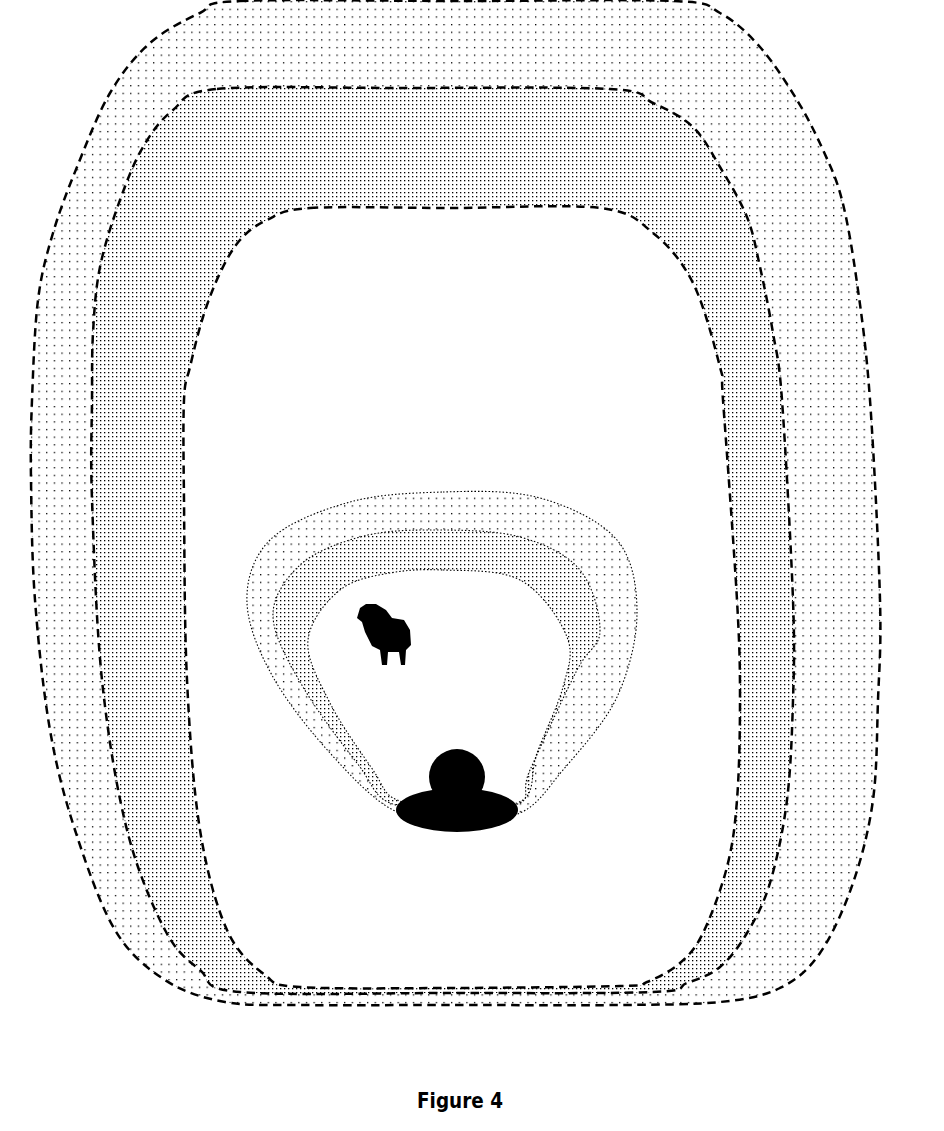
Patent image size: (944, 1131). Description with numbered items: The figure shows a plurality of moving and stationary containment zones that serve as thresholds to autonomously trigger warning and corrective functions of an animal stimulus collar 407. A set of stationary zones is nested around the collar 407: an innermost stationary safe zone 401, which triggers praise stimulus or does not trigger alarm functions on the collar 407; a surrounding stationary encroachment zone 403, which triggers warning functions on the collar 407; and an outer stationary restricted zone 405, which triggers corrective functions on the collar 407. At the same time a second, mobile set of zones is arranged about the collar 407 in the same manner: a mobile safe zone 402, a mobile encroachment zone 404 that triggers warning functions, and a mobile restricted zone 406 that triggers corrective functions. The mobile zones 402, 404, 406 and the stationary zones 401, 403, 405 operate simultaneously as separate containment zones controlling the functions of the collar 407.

The stationary safe zone 401 is at (268, 332).
The mobile safe zone 402 is at (411, 601).
The stationary encroachment zone 403 is at (390, 150).
The mobile encroachment zone 404 is at (511, 556).
The stationary restricted zone 405 is at (570, 36).
The mobile restricted zone 406 is at (621, 598).
The stimulus collar 407 is at (412, 618).